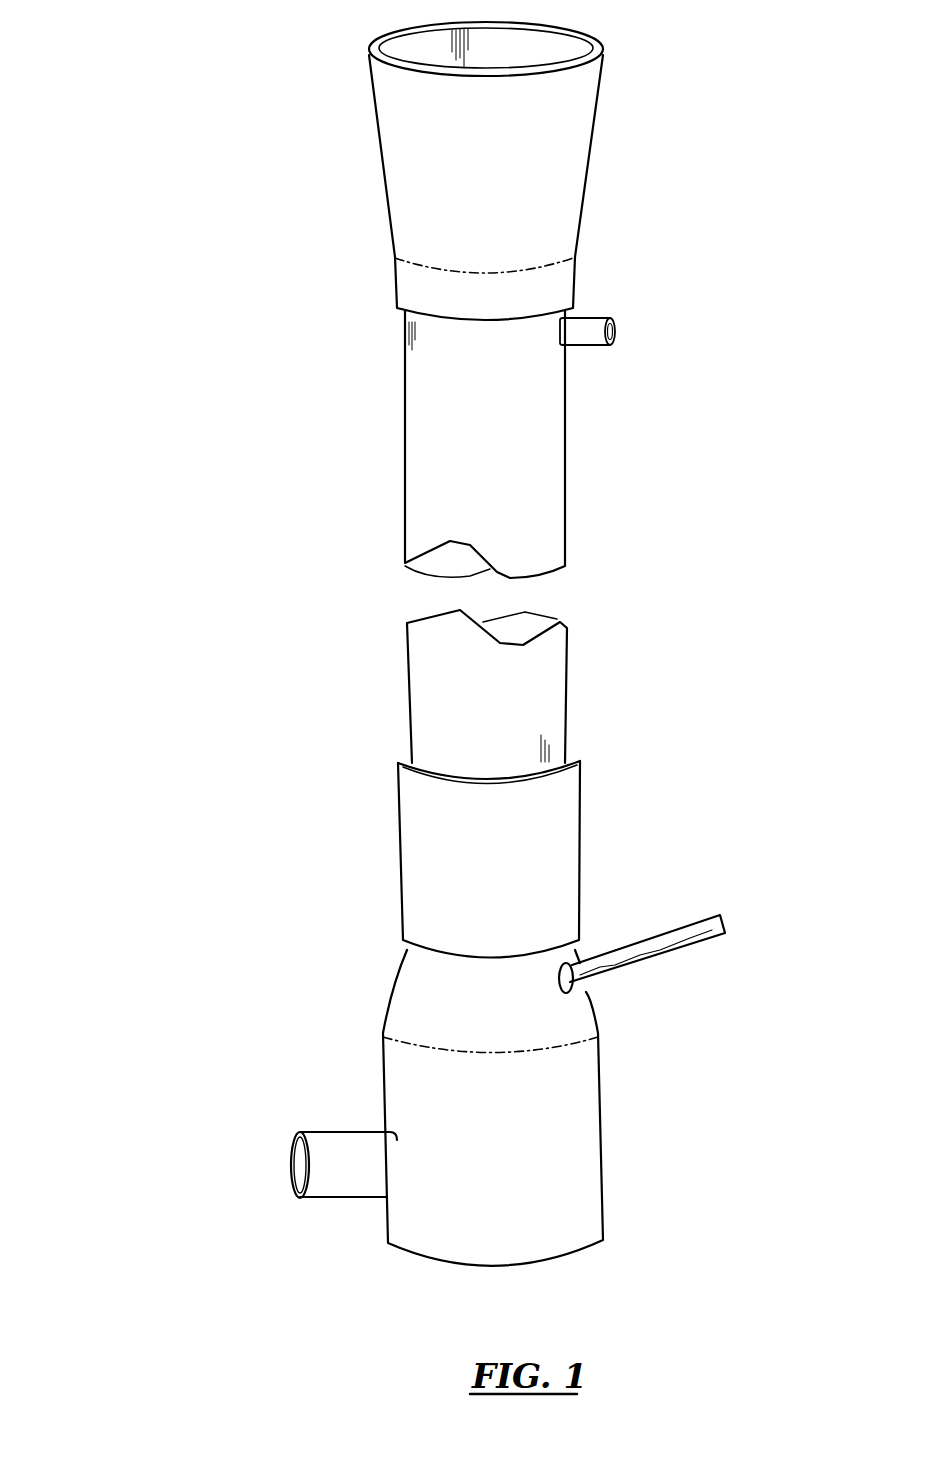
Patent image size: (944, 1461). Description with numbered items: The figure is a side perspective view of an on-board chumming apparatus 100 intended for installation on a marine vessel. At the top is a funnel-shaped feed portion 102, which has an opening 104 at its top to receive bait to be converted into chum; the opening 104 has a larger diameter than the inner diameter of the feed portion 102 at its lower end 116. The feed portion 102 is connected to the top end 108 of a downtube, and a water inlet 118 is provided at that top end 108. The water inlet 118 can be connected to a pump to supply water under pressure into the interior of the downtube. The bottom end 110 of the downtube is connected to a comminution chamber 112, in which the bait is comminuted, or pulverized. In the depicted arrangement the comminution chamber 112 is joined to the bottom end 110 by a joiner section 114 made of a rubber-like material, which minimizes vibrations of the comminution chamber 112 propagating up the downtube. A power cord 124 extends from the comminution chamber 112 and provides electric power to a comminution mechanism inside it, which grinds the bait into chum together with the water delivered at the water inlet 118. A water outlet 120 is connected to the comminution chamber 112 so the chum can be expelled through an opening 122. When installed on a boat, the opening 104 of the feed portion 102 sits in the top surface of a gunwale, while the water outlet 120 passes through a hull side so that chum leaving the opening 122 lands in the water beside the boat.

The on-board chumming apparatus 100 is at (82, 85).
The feed portion 102 is at (502, 171).
The opening 104 is at (410, 48).
The top end 108 is at (402, 325).
The bottom end 110 is at (415, 760).
The comminution chamber 112 is at (385, 1053).
The joiner section 114 is at (439, 815).
The lower end 116 is at (568, 278).
The water inlet 118 is at (600, 342).
The water outlet 120 is at (292, 1108).
The opening 122 is at (298, 1165).
The power cord 124 is at (645, 963).